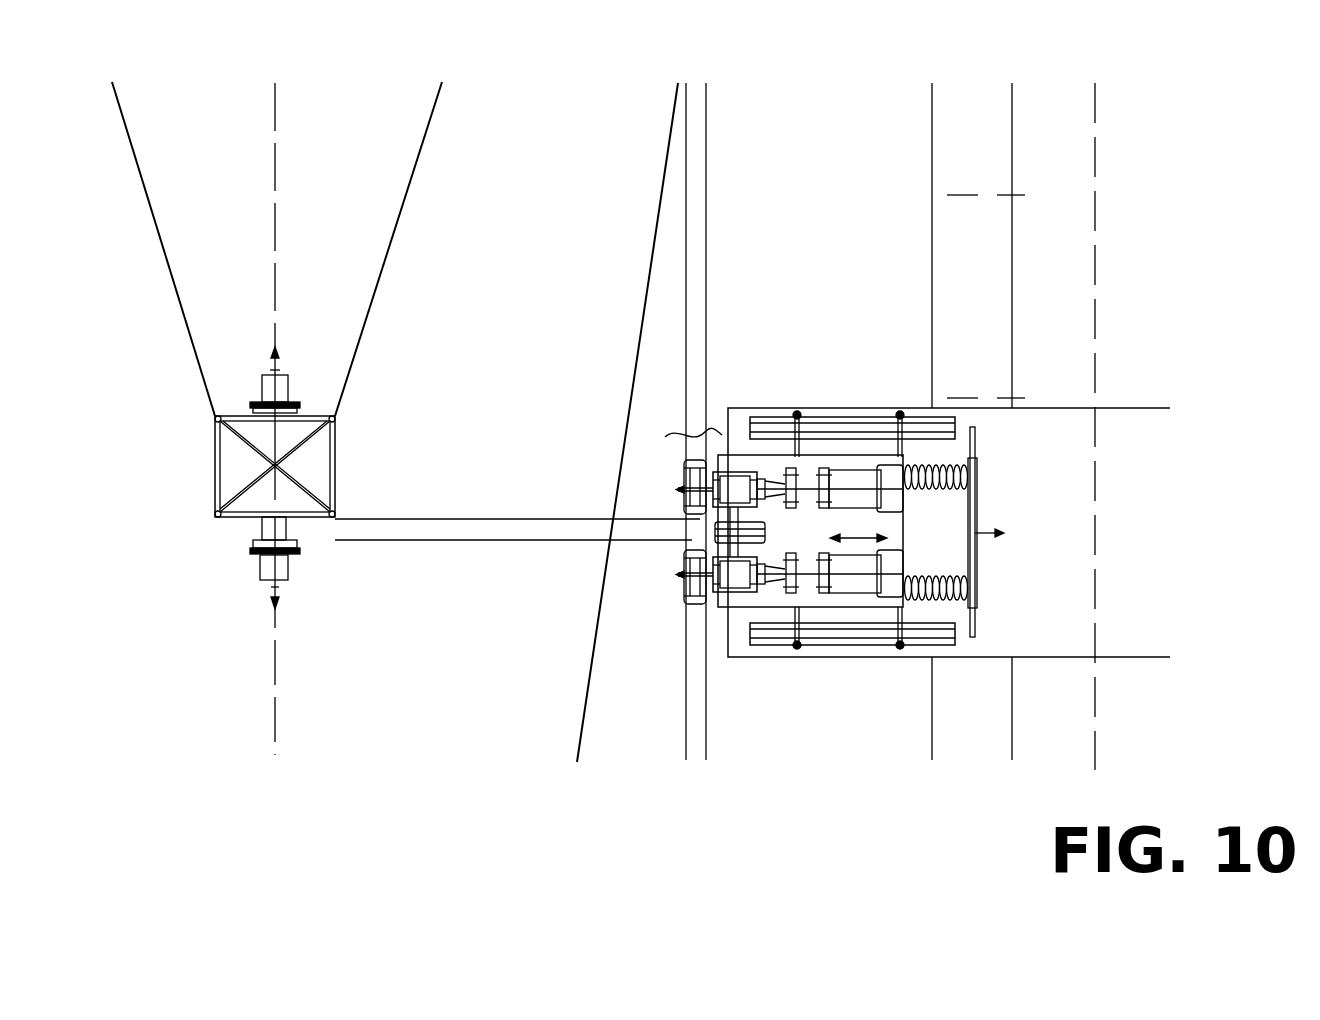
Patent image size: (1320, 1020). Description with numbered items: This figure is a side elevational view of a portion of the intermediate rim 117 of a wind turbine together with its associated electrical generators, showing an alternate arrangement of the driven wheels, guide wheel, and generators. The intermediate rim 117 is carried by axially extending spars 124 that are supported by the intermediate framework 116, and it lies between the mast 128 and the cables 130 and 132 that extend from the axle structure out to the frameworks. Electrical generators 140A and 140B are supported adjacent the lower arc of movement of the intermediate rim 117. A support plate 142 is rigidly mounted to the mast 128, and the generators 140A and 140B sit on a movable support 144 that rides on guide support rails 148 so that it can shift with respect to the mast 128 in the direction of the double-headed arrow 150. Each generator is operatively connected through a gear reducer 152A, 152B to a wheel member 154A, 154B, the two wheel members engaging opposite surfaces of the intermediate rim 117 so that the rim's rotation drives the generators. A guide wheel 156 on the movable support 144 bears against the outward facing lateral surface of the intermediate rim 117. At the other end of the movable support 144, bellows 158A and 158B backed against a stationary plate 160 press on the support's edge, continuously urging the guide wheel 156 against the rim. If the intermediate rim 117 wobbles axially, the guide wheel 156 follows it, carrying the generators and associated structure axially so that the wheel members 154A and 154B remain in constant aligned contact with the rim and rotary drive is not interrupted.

The intermediate framework 116 is at (380, 504).
The intermediate rim 117 is at (698, 325).
The spars 124 is at (532, 518).
The mast 128 is at (1075, 328).
The cable 130 is at (592, 642).
The cables 132 is at (165, 252).
The electrical generator 140A is at (830, 488).
The electrical generator 140B is at (830, 573).
The support plate 142 is at (958, 652).
The movable support 144 is at (903, 524).
The guide support rails 148 is at (812, 418).
The double-headed arrow 150 is at (876, 537).
The gear reducer 152A is at (733, 470).
The gear reducer 152B is at (742, 573).
The wheel member 154A is at (683, 478).
The wheel member 154B is at (692, 603).
The guide wheel 156 is at (762, 535).
The bellows 158A is at (970, 462).
The bellows 158B is at (970, 590).
The stationary plate 160 is at (975, 568).